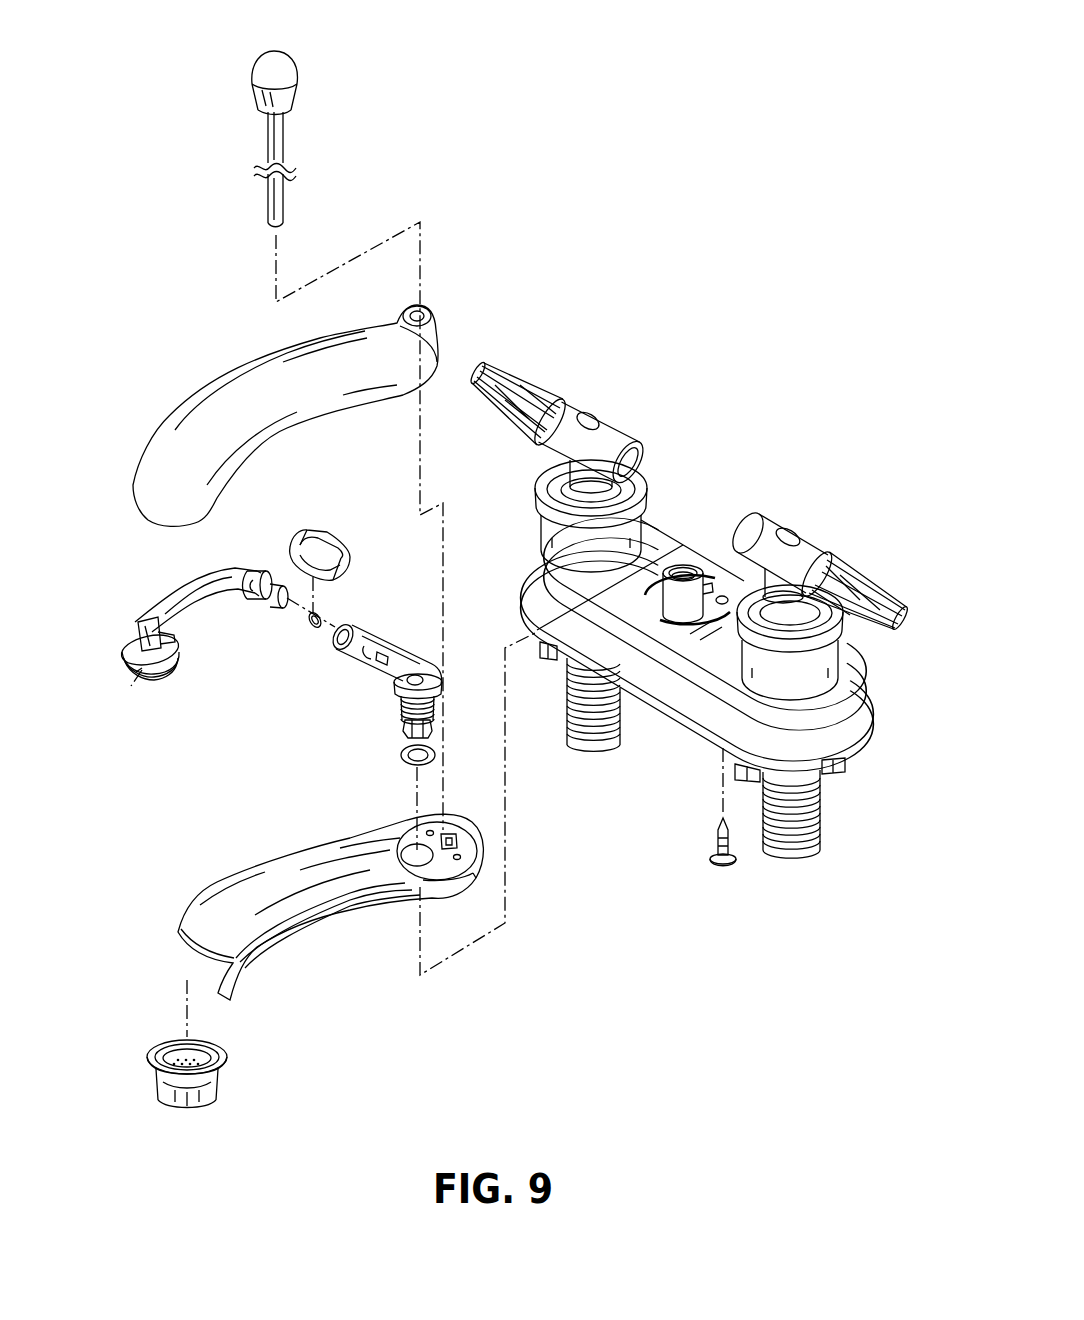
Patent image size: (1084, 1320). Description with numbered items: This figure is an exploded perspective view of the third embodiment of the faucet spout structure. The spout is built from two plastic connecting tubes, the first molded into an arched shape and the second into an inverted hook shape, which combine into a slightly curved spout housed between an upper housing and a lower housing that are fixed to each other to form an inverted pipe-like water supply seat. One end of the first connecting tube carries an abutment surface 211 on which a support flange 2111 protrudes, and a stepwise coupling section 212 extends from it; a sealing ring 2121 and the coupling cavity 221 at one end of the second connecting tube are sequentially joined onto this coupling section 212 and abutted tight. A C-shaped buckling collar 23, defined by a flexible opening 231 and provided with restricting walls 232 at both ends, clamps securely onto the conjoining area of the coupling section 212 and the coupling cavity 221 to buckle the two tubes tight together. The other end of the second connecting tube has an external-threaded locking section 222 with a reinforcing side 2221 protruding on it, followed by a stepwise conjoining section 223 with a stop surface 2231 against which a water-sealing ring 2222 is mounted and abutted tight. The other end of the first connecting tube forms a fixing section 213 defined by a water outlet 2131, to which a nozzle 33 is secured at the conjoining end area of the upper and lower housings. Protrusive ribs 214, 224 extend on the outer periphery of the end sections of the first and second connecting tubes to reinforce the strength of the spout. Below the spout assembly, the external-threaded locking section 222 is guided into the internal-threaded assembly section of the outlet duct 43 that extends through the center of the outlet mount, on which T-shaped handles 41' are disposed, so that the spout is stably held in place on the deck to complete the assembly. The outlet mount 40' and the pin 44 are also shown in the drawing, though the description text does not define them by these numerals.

The support flange 2111 is at (257, 568).
The abutment surface 211 is at (259, 591).
The coupling section 212 is at (273, 607).
The sealing ring 2121 is at (312, 623).
The fixing section 213 is at (170, 676).
The water outlet 2131 is at (137, 678).
The protrusive rib 214 is at (138, 623).
The coupling cavity 221 is at (357, 627).
The external-threaded locking section 222 is at (398, 703).
The reinforcing side 2221 is at (394, 685).
The water-sealing ring 2222 is at (406, 767).
The stop surface 2231 is at (403, 728).
The conjoining section 223 is at (388, 760).
The protrusive rib 224 is at (378, 667).
The C-shaped buckling collar 23 is at (313, 532).
The flexible opening 231 is at (324, 550).
The restricting walls 232 is at (343, 558).
The nozzle 33 is at (220, 1088).
The pin 44 is at (282, 137).
The faucet body 40' is at (689, 600).
The T-shaped handles 41' is at (559, 453).
The outlet duct 43 is at (688, 565).